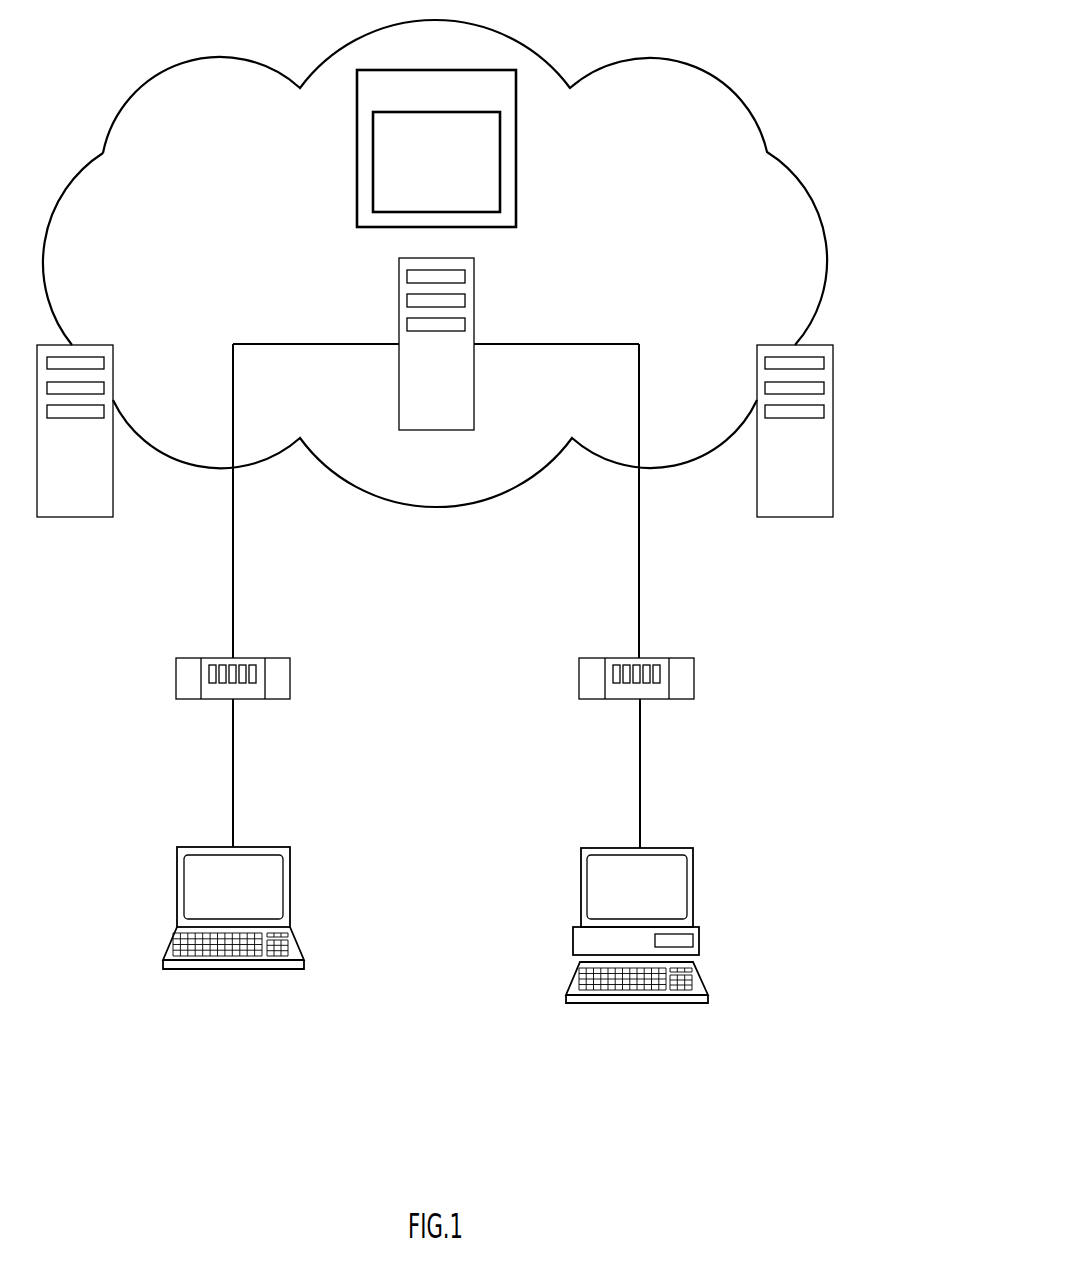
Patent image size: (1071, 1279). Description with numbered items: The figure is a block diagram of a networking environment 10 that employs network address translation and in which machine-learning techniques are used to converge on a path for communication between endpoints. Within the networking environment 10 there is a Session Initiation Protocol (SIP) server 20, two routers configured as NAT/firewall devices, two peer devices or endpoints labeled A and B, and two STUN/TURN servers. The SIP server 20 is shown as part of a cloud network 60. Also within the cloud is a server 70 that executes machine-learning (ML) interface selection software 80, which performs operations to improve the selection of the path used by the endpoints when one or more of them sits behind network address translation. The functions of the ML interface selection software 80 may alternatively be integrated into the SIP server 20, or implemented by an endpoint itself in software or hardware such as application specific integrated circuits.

The networking environment 10 is at (90, 33).
The Session Initiation Protocol (SIP) server 20 is at (474, 310).
The cloud network 60 is at (700, 63).
The server 70 is at (357, 143).
The machine-learning (ML) interface selection software 80 is at (373, 162).